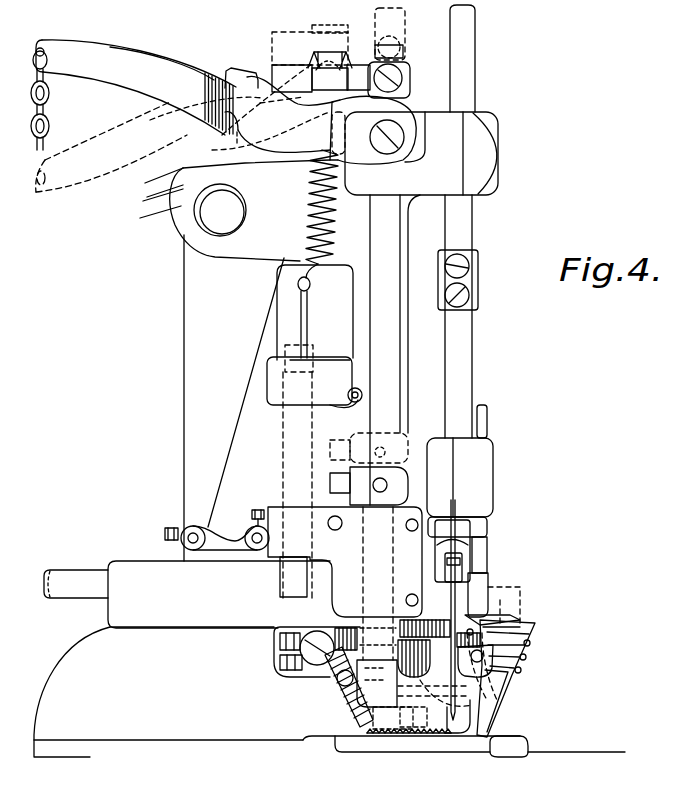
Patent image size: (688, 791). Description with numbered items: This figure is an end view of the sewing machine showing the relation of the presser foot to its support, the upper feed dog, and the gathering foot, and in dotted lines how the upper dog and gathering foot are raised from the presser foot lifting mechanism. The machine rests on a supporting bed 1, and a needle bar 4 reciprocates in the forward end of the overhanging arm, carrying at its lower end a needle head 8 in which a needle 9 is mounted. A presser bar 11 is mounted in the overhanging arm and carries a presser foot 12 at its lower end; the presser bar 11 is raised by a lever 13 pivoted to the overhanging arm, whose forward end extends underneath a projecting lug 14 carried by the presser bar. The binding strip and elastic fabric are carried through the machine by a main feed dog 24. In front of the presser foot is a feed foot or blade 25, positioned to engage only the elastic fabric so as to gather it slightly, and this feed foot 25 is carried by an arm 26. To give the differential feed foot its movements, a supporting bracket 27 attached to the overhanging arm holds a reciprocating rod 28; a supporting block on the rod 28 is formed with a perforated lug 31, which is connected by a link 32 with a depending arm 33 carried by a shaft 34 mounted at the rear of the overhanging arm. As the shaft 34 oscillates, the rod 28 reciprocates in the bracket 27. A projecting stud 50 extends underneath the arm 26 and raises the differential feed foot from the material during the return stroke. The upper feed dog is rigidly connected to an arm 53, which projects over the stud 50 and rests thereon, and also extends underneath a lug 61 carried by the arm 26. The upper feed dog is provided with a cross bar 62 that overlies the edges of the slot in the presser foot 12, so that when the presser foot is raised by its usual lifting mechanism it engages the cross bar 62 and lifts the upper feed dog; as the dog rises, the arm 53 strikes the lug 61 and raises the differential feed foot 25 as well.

The supporting bed 1 is at (608, 739).
The needle bar 4 is at (457, 230).
The needle head 8 is at (478, 548).
The needle 9 is at (453, 590).
The presser bar 11 is at (382, 377).
The presser foot 12 is at (443, 718).
The lever 13 is at (187, 75).
The projecting lug 14 is at (353, 80).
The main feed dog 24 is at (462, 740).
The feed foot or blade 25 is at (493, 718).
The arm 26 is at (497, 628).
The supporting bracket 27 is at (145, 553).
The reciprocating rod 28 is at (75, 582).
The perforated lug 31 is at (248, 563).
The link 32 is at (218, 535).
The depending arm 33 is at (197, 385).
The shaft 34 is at (237, 207).
The projecting stud 50 is at (447, 663).
The arm 53 is at (412, 643).
The lug 61 is at (487, 638).
The cross bar 62 is at (347, 712).